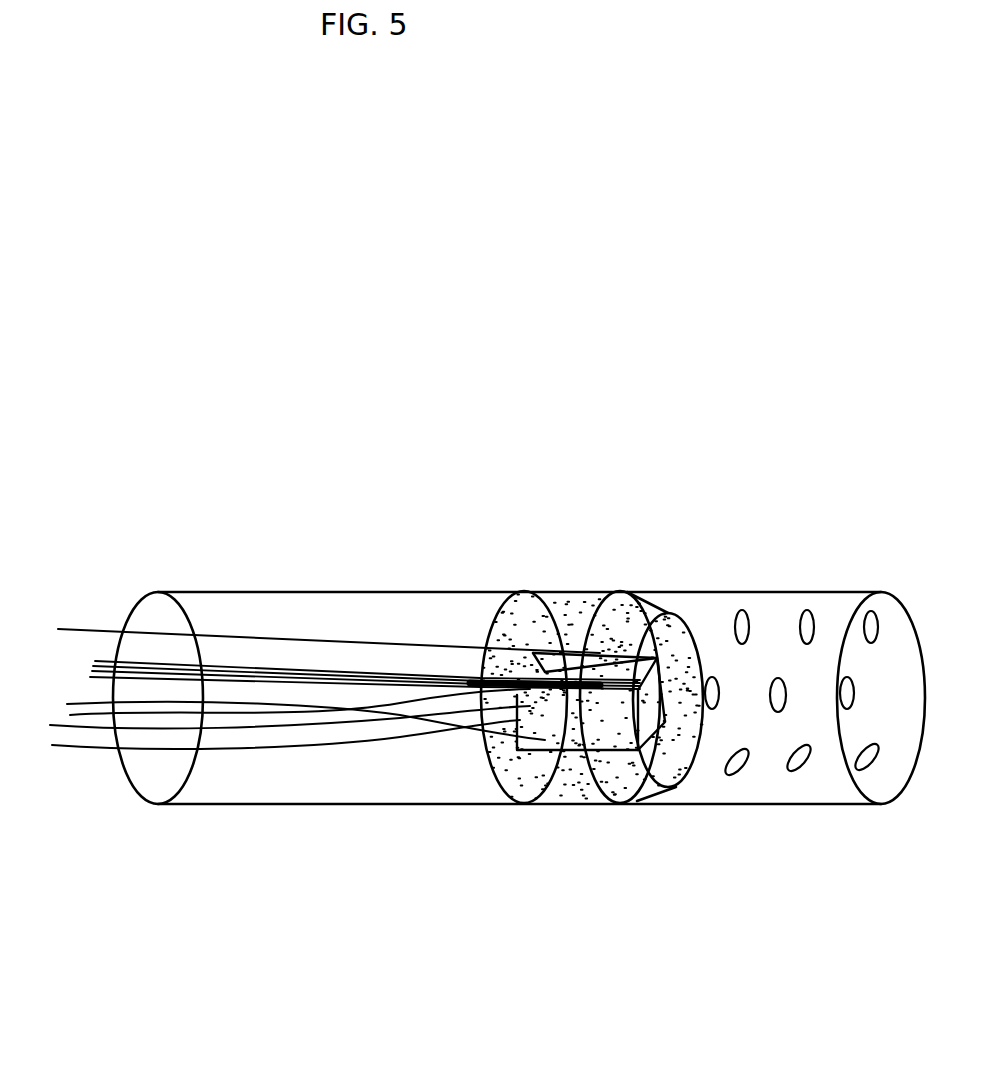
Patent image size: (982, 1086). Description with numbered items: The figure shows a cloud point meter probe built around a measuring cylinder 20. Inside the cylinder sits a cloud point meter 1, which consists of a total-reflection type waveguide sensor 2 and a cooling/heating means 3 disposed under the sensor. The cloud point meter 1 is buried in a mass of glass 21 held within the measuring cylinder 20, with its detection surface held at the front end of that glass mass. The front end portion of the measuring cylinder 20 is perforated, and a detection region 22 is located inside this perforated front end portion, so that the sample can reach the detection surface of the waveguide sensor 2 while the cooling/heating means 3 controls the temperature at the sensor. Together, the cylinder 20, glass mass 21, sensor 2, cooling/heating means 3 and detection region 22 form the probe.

The cloud point meter 1 is at (641, 562).
The total-reflection type waveguide sensor 2 is at (603, 703).
The cooling/heating means 3 is at (614, 826).
The measuring cylinder 20 is at (323, 605).
The mass of glass 21 is at (580, 593).
The detection region 22 is at (703, 657).